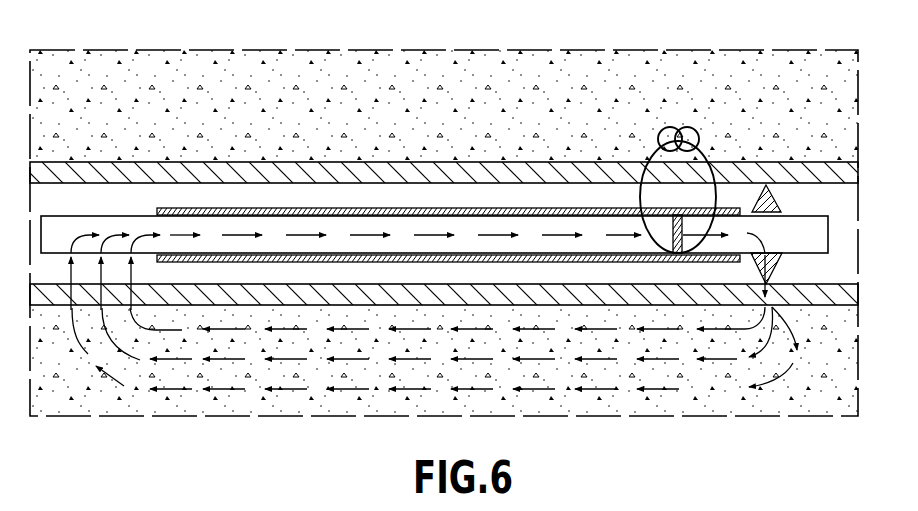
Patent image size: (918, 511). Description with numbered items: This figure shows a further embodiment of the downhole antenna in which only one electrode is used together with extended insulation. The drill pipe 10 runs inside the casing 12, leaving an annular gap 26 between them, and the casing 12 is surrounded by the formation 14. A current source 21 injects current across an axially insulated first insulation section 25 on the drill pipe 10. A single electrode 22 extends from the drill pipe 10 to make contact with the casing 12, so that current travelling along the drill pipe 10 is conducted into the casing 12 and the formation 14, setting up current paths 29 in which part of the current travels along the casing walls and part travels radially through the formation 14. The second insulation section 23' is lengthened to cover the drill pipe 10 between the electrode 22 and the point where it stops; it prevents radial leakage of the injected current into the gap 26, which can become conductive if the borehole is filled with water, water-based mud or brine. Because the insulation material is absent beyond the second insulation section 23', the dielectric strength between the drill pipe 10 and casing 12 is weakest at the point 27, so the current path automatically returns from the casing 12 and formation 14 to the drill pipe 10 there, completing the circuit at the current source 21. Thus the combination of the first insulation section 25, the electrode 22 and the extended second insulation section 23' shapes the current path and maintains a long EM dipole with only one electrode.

The drill pipe 10 is at (86, 225).
The casing 12 is at (822, 162).
The formation 14 is at (66, 70).
The current source 21 is at (660, 137).
The electrode 22 is at (766, 186).
The second insulation section 23' is at (448, 196).
The first insulation section 25 is at (683, 213).
The gap 26 is at (120, 200).
The point 27 is at (132, 276).
The current paths 29 is at (668, 400).